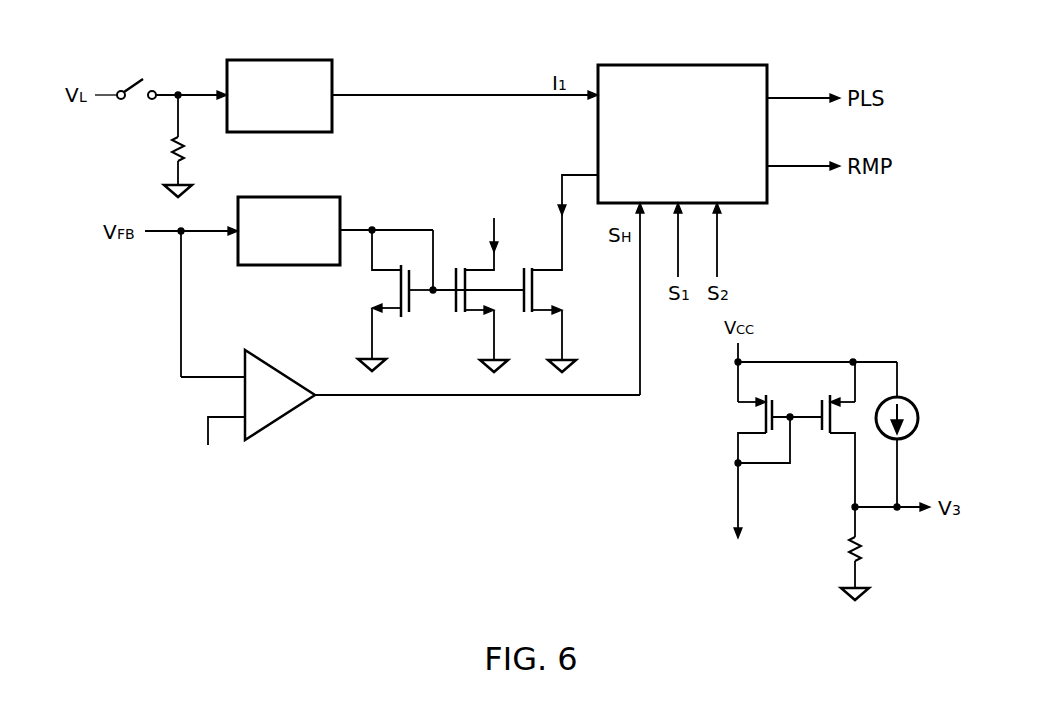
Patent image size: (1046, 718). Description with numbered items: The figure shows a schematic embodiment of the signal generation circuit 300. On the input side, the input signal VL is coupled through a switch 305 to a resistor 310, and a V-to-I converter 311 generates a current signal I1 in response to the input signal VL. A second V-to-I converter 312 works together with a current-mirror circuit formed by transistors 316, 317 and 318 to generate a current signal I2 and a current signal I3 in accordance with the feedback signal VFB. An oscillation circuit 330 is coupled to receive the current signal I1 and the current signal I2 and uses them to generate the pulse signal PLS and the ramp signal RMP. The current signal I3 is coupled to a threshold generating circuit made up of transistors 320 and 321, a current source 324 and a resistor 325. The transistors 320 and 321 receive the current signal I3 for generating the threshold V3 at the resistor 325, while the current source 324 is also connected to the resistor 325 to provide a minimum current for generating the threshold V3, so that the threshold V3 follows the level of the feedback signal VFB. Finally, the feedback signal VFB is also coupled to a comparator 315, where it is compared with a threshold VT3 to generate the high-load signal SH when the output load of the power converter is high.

The signal generation circuit 300 is at (902, 40).
The switch 305 is at (142, 77).
The resistor 310 is at (159, 146).
The V-to-I converter 311 is at (279, 83).
The V-to-I converter 312 is at (289, 216).
The comparator 315 is at (410, 409).
The transistor 316 is at (383, 300).
The transistor 317 is at (479, 282).
The transistor 318 is at (564, 273).
The transistor 320 is at (759, 485).
The transistor 321 is at (832, 434).
The current source 324 is at (921, 434).
The resistor 325 is at (876, 553).
The oscillation circuit 330 is at (682, 118).